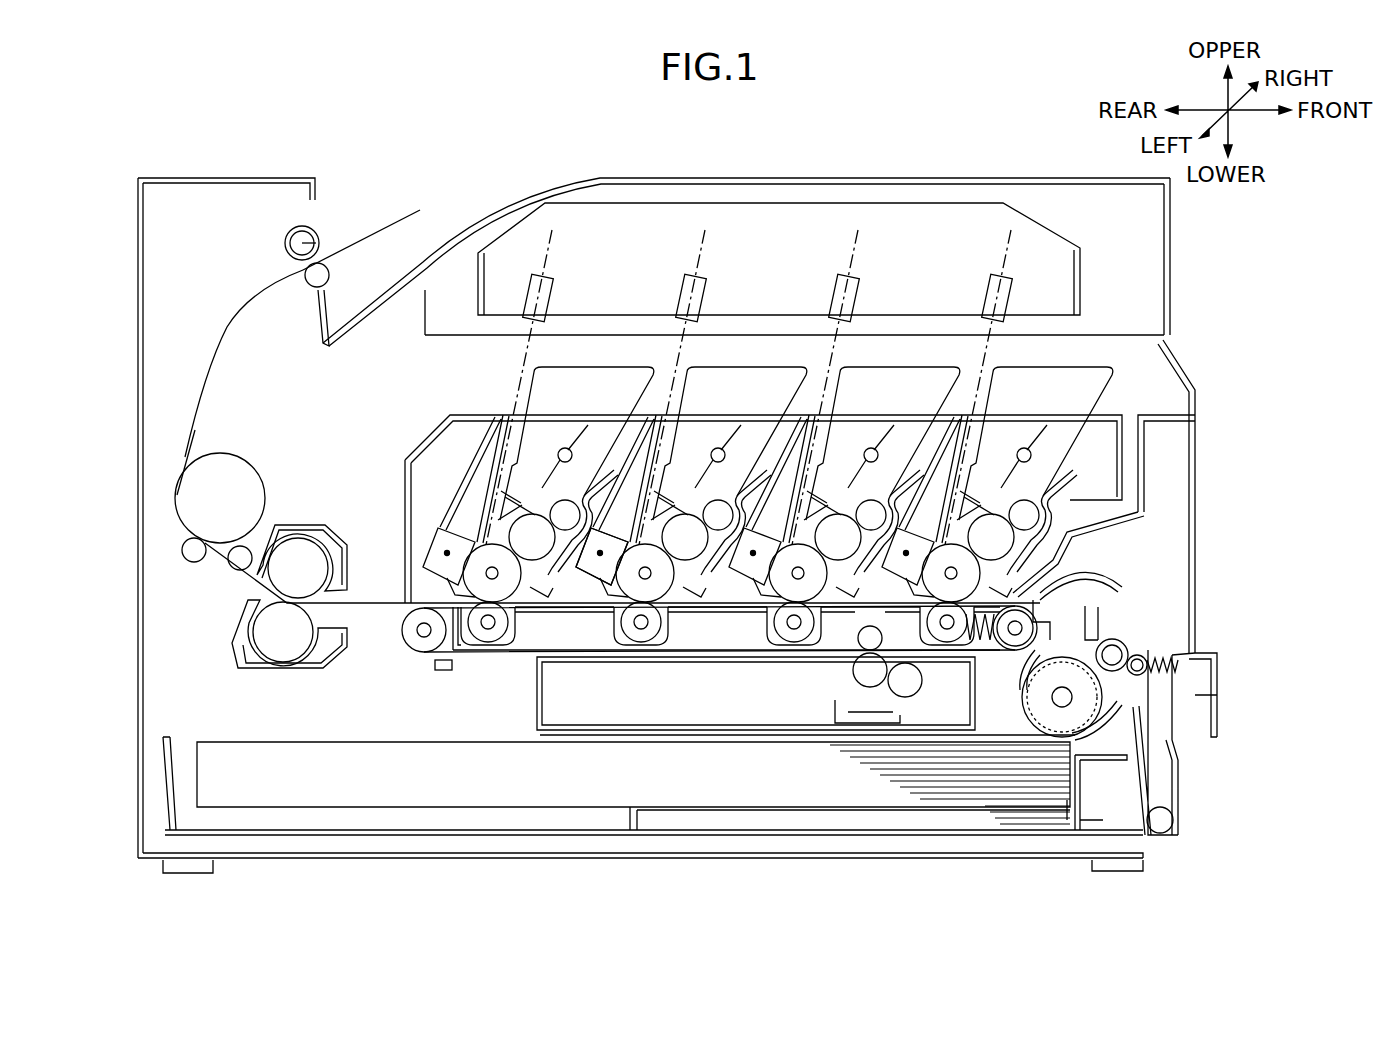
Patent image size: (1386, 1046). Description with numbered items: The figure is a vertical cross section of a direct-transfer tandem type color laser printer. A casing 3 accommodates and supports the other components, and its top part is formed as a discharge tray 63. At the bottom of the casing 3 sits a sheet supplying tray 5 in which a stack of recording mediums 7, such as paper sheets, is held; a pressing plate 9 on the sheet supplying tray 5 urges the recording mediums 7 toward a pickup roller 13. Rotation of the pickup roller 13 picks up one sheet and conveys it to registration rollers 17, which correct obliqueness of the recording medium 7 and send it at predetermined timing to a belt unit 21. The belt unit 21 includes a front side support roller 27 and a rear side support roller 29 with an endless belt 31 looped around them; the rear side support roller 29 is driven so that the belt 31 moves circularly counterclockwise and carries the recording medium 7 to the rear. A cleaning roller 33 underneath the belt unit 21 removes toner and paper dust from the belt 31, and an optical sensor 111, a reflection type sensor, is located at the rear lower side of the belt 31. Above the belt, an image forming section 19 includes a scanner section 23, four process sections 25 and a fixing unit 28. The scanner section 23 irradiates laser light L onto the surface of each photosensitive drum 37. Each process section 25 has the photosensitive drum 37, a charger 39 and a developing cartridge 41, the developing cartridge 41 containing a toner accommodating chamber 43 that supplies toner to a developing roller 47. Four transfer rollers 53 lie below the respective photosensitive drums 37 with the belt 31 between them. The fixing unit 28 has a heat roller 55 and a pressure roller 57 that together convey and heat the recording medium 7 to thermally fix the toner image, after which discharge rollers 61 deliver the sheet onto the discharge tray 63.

The casing 3 is at (242, 178).
The sheet supplying tray 5 is at (412, 838).
The recording medium 7 is at (383, 223).
The pressing plate 9 is at (742, 810).
The pickup roller 13 is at (1048, 730).
The registration rollers 17 is at (1128, 640).
The image forming section 19 is at (403, 440).
The belt unit 21 is at (477, 665).
The scanner section 23 is at (790, 220).
The process section 25 is at (1040, 355).
The front side support roller 27 is at (1015, 640).
The fixing unit 28 is at (237, 655).
The rear side support roller 29 is at (425, 645).
The belt 31 is at (507, 655).
The cleaning roller 33 is at (867, 668).
The photosensitive drum 37 is at (640, 602).
The charger 39 is at (597, 548).
The developing cartridge 41 is at (736, 605).
The toner accommodating chamber 43 is at (693, 530).
The developing roller 47 is at (690, 560).
The transfer roller 53 is at (947, 637).
The heat roller 55 is at (285, 580).
The pressure roller 57 is at (272, 635).
The discharge rollers 61 is at (320, 277).
The discharge tray 63 is at (467, 222).
The optical sensor 111 is at (444, 672).
The laser light L is at (692, 262).